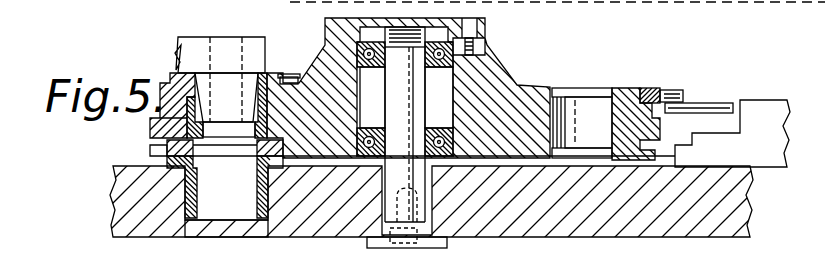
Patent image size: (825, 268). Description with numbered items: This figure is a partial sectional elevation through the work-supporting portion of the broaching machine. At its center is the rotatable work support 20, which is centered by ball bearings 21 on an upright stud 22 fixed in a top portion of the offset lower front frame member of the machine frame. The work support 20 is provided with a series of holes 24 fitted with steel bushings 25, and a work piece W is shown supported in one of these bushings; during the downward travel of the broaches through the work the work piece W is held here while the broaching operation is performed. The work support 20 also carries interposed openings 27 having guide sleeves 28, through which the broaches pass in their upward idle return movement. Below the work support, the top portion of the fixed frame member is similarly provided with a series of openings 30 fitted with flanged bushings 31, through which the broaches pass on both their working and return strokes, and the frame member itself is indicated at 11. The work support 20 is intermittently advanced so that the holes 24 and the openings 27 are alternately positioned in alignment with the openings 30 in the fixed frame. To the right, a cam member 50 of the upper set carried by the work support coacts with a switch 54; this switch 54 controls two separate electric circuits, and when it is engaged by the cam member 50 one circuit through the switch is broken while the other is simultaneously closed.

The work pieces W is at (259, 44).
The base plate 11 is at (751, 218).
The rotatable work support 20 is at (494, 66).
The ball bearings 21 is at (440, 130).
The upright stud 22 is at (396, 100).
The holes 24 is at (197, 122).
The steel bushings 25 is at (293, 73).
The interposed openings 27 is at (579, 88).
The guide sleeves 28 is at (612, 121).
The openings 30 is at (253, 227).
The flanged bushings 31 is at (192, 192).
The cam members 50 is at (649, 90).
The switch 54 is at (757, 107).